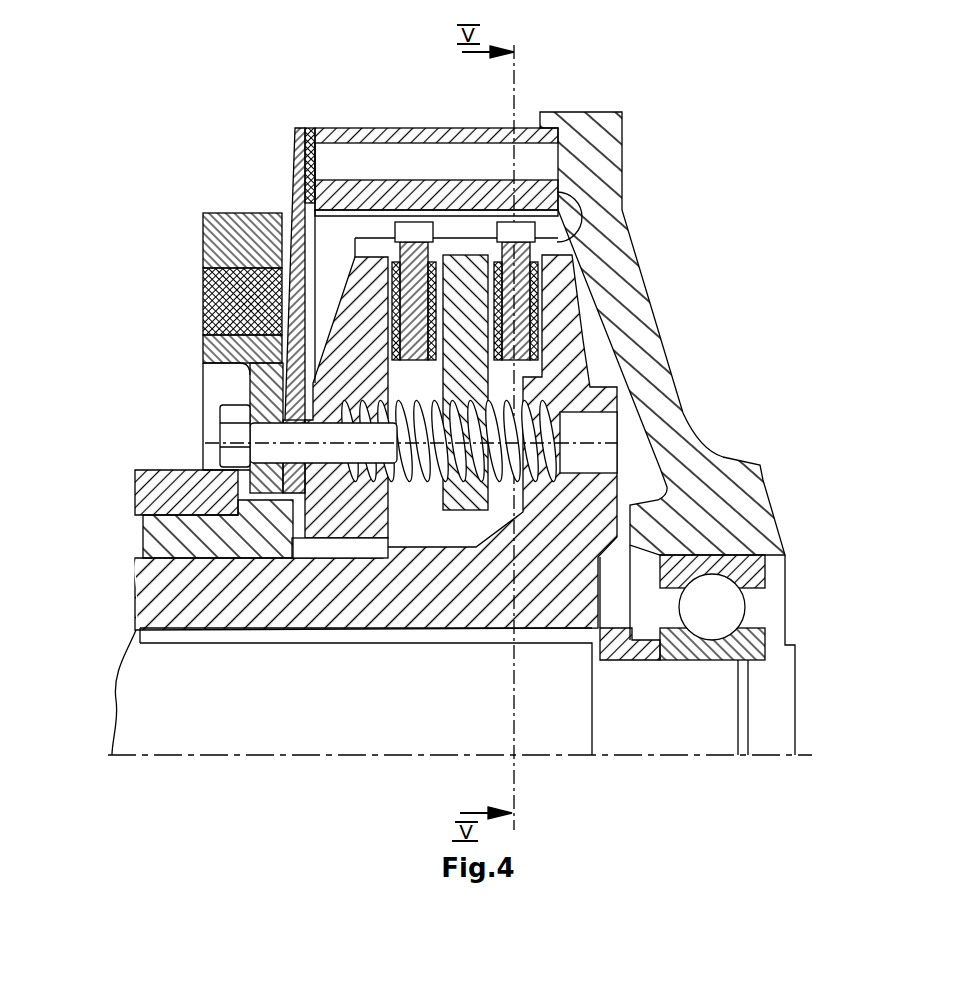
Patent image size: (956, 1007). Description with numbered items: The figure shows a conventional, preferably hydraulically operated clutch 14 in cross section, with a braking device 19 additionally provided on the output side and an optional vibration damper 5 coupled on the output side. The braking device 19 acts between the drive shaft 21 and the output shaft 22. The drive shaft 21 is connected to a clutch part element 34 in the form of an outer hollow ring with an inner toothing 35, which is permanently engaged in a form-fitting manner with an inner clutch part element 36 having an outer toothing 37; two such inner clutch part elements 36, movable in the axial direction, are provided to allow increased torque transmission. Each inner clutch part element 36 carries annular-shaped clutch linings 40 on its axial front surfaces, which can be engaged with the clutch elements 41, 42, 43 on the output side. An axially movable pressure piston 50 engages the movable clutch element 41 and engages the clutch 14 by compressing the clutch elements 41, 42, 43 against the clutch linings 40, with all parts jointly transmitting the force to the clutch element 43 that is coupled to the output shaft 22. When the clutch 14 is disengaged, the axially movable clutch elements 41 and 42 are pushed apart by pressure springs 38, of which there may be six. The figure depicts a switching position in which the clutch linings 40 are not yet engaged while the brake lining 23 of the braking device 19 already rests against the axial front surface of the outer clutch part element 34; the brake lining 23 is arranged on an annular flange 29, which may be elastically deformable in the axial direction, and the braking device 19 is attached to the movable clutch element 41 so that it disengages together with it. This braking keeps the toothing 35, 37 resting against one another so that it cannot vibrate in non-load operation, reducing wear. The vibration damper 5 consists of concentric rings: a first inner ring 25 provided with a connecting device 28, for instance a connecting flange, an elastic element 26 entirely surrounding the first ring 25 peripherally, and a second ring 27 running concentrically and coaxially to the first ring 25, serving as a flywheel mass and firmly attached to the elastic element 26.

The vibration damper 5 is at (223, 158).
The clutch 14 is at (748, 248).
The braking device 19 is at (275, 110).
The drive shaft 21 is at (717, 490).
The output shaft 22 is at (170, 675).
The brake lining 23 is at (308, 127).
The first inner ring 25 is at (205, 355).
The elastic element 26 is at (205, 297).
The second ring 27 is at (220, 240).
The connecting device 28 is at (255, 385).
The annular flange 29 is at (294, 157).
The clutch part element 34 is at (440, 128).
The inner toothing 35 is at (452, 225).
The inner clutch part element 36 is at (360, 320).
The outer toothing 37 is at (575, 225).
The pressure spring 38 is at (606, 418).
The clutch lining 40 is at (556, 320).
The movable clutch element 41 is at (297, 213).
The clutch element 42 is at (465, 370).
The clutch element 43 is at (607, 333).
The pressure piston 50 is at (182, 537).